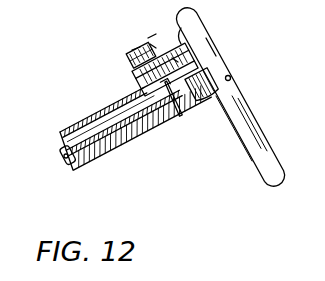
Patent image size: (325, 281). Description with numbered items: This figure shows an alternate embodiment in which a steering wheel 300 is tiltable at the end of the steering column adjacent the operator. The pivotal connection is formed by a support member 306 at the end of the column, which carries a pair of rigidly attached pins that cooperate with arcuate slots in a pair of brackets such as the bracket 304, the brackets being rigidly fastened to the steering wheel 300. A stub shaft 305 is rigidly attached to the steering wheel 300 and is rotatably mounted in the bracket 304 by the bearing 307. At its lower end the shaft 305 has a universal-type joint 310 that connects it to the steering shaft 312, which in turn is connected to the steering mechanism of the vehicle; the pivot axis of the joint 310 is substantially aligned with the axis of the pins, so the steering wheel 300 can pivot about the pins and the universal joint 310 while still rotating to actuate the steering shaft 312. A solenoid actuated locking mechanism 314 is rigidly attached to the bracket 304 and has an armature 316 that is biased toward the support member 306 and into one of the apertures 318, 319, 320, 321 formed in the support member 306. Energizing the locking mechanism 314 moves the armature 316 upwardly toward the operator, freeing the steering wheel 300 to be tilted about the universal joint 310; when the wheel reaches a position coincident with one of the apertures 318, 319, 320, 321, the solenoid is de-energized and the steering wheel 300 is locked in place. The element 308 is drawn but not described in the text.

The steering wheel 300 is at (262, 131).
The bracket 304 is at (208, 94).
The stub shaft 305 is at (213, 44).
The support member 306 is at (158, 73).
The bearing 307 is at (228, 76).
The guide rail 308 is at (128, 137).
The universal-type joint 310 is at (171, 111).
The steering shaft 312 is at (63, 148).
The solenoid actuated locking mechanism 314 is at (186, 43).
The armature 316 is at (173, 40).
The aperture 318 is at (172, 59).
The aperture 319 is at (152, 45).
The aperture 320 is at (150, 38).
The aperture 321 is at (133, 51).